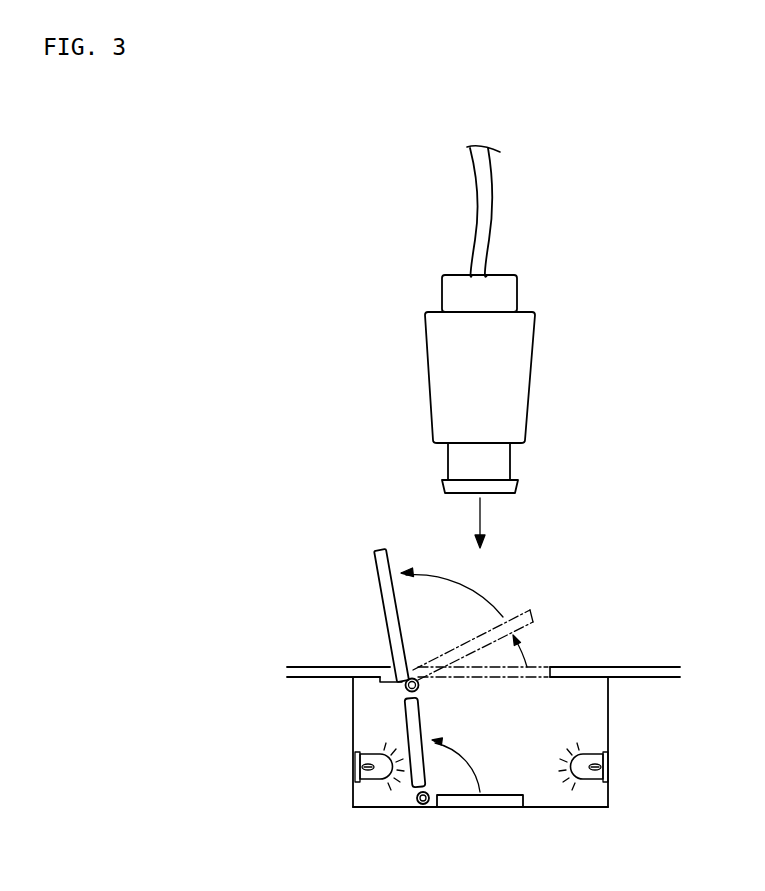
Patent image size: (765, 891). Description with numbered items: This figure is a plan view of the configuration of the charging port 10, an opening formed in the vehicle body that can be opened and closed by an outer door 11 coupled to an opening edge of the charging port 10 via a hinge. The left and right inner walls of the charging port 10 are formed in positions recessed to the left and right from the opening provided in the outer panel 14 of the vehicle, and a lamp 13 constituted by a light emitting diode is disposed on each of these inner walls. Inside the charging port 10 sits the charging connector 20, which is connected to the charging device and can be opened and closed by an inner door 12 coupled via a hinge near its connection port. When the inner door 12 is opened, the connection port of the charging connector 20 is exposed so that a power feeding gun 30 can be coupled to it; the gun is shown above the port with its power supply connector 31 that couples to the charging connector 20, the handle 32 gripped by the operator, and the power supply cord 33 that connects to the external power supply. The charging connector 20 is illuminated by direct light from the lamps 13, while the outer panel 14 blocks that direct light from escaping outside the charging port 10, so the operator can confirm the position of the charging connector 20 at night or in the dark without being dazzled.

The charging port 10 is at (590, 648).
The outer door 11 is at (387, 593).
The inner door 12 is at (403, 719).
The lamp 13 is at (367, 778).
The outer panel 14 is at (323, 676).
The charging connector 20 is at (500, 800).
The power feeding gun 30 is at (548, 382).
The power supply connector 31 is at (513, 487).
The handle 32 is at (517, 292).
The power supply cord 33 is at (483, 201).